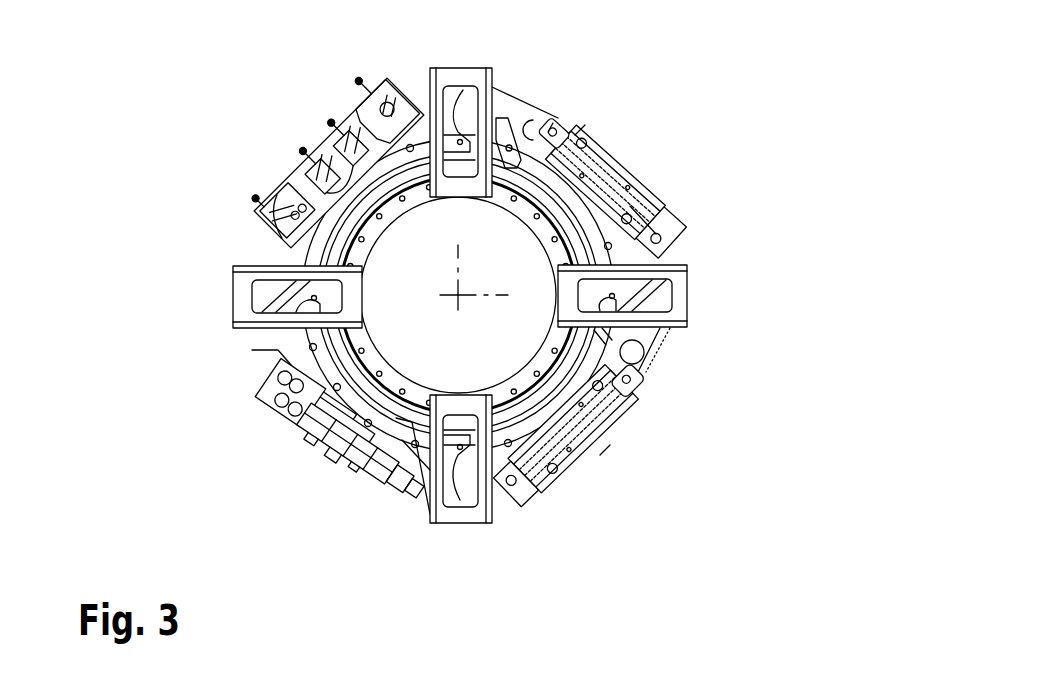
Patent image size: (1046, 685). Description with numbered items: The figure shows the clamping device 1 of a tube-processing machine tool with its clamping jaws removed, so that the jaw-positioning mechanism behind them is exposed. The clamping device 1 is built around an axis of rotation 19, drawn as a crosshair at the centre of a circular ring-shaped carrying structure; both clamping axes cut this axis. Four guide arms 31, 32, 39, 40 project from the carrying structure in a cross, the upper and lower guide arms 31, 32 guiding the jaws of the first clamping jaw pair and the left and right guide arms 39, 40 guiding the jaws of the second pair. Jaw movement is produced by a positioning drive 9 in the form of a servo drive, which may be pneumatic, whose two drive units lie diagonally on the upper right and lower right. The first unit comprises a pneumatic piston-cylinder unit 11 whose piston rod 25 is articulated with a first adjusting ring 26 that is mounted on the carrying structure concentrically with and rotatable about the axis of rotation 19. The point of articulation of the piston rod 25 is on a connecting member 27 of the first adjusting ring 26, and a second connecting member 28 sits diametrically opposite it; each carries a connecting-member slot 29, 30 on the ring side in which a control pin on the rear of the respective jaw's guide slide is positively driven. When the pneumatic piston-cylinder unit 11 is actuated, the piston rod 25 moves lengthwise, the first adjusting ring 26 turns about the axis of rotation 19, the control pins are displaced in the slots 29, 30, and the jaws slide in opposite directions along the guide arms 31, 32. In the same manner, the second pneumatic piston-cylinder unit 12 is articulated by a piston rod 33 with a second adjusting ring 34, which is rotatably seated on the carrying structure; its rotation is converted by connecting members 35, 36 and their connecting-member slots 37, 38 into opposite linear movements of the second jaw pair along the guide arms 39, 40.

The clamping device 1 is at (216, 156).
The positioning drive 9 is at (622, 100).
The pneumatic piston-cylinder unit 11 is at (660, 182).
The pneumatic piston-cylinder unit 12 is at (622, 445).
The axis of rotation 19 is at (456, 297).
The piston rod 25 is at (566, 116).
The first adjusting ring 26 is at (535, 96).
The connecting member 27 is at (503, 95).
The connecting member 28 is at (431, 519).
The connecting-member slot 29 is at (468, 92).
The connecting-member slot 30 is at (456, 497).
The guide arm 31 is at (437, 106).
The guide arm 32 is at (493, 485).
The piston rod 33 is at (630, 393).
The second adjusting ring 34 is at (674, 333).
The connecting member 35 is at (658, 360).
The connecting member 36 is at (290, 258).
The connecting-member slot 37 is at (653, 278).
The connecting-member slot 38 is at (258, 308).
The guide arm 39 is at (690, 268).
The guide arm 40 is at (246, 332).